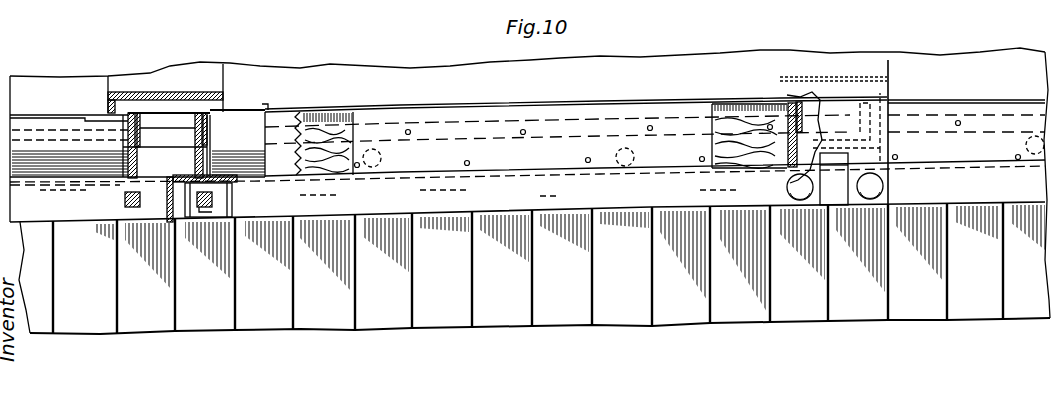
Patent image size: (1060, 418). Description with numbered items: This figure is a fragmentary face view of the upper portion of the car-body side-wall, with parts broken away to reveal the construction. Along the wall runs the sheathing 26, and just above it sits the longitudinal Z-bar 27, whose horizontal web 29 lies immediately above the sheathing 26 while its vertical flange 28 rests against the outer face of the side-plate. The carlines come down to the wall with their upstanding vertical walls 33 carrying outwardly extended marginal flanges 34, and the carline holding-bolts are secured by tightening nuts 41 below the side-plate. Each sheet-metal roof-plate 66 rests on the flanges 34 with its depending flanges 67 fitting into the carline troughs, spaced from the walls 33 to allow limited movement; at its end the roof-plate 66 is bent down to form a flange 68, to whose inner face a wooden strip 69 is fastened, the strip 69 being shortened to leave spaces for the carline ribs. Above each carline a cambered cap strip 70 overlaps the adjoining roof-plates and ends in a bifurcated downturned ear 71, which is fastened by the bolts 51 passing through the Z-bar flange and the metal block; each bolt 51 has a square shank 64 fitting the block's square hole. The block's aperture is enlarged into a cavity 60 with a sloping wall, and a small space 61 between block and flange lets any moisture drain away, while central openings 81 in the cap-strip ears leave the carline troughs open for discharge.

The sheathing 26 is at (503, 325).
The Z-bar 27 is at (512, 193).
The vertical flange 28 is at (70, 153).
The horizontal web 29 is at (60, 188).
The vertical walls 33 is at (216, 160).
The marginal flanges 34 is at (263, 102).
The tightening nuts 41 is at (20, 2).
The bolts 51 is at (800, 200).
The cavity 60 is at (225, 218).
The small space 61 is at (213, 210).
The shank 64 is at (137, 207).
The roof-plate 66 is at (527, 123).
The depending flanges 67 is at (210, 133).
The flange 68 is at (638, 140).
The wooden strip 69 is at (333, 170).
The cap strip 70 is at (213, 100).
The downturned ear 71 is at (183, 106).
The central openings 81 is at (846, 149).